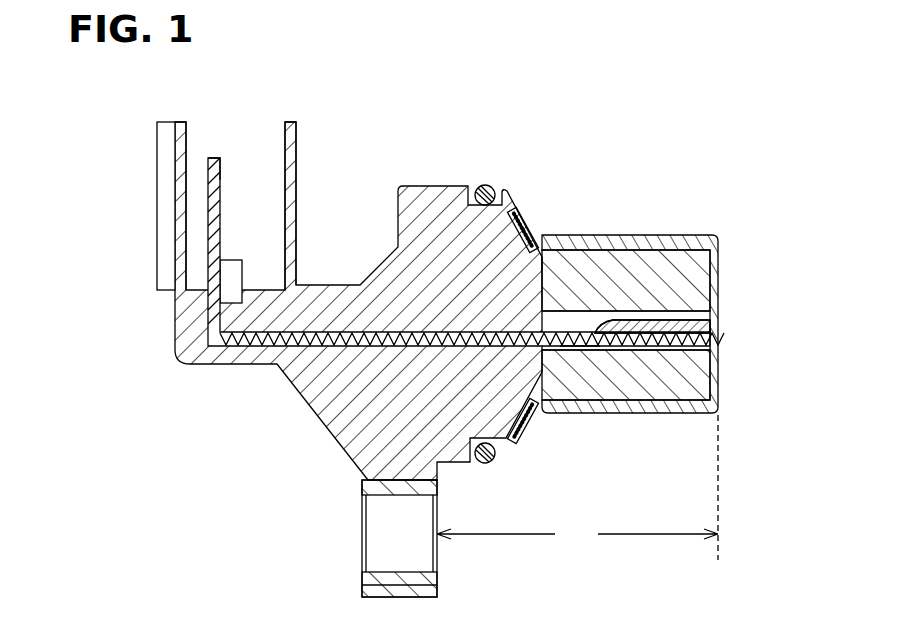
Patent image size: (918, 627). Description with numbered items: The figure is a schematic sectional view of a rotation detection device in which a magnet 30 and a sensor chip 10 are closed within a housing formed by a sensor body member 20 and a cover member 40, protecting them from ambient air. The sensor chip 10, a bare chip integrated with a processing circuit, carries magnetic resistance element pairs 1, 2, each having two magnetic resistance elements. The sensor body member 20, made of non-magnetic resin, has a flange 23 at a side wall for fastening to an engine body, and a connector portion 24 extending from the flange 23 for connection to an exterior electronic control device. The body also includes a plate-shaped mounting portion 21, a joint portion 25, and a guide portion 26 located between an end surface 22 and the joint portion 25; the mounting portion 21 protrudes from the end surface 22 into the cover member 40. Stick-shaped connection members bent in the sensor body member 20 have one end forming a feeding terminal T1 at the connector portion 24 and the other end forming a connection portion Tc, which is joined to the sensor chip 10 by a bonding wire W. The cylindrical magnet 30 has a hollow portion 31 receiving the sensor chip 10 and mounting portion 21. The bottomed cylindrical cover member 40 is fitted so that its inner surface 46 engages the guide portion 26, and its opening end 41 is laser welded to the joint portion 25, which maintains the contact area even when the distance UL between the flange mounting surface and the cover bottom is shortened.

The magnetic resistance element pair 1 is at (706, 322).
The magnetic resistance element pair 2 is at (652, 326).
The sensor chip 10 is at (702, 340).
The sensor body member 20 is at (468, 445).
The mounting portion 21 is at (636, 350).
The end surface 22 is at (549, 258).
The flange 23 is at (362, 594).
The connector portion 24 is at (296, 147).
The joint portion 25 is at (500, 453).
The guide portion 26 is at (538, 424).
The magnet 30 is at (700, 380).
The hollow portion 31 is at (578, 316).
The cover member 40 is at (612, 237).
The opening end 41 is at (540, 210).
The inner surface 46 is at (510, 185).
The bonding wire W is at (605, 317).
The connection portion Tc is at (582, 347).
The distance of inner side of mounting surface UL is at (577, 487).
The feeding terminal T1 is at (220, 170).